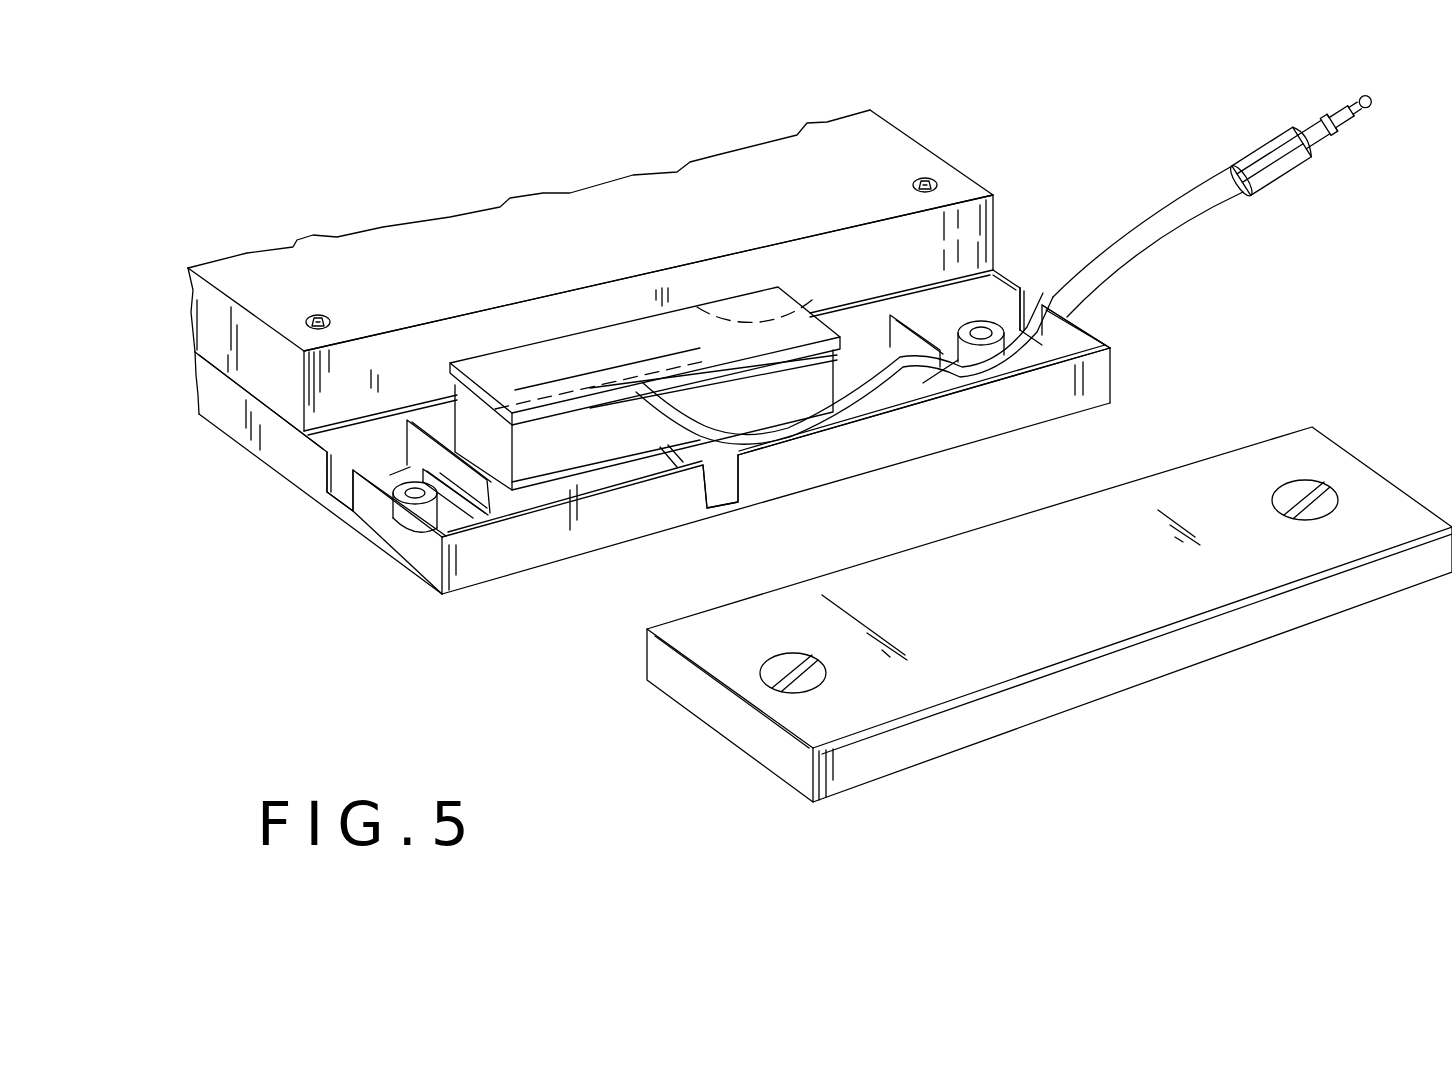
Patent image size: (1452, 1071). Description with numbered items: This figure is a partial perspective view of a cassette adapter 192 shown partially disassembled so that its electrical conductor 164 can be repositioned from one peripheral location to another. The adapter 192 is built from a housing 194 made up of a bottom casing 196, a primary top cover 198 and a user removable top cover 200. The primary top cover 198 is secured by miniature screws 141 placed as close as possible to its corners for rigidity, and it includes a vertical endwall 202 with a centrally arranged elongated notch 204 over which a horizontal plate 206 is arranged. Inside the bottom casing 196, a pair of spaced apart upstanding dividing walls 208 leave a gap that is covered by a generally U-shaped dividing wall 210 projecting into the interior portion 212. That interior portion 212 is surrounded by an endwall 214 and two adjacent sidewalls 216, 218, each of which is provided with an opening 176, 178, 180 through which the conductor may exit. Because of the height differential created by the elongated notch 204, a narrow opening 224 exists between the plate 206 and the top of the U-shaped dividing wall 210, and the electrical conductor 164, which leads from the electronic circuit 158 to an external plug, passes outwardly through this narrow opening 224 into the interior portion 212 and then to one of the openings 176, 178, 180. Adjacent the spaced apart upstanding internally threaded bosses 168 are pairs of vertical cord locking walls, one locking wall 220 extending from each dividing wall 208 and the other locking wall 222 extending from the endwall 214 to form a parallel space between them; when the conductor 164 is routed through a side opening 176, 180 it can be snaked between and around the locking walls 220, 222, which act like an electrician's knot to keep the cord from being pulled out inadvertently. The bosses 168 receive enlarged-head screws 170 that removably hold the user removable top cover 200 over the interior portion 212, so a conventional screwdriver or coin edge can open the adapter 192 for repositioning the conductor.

The screws 141 is at (317, 316).
The electronic circuit 158 is at (740, 340).
The electrical conductor 164 is at (1185, 207).
The internally threaded bosses 168 is at (420, 512).
The screws 170 is at (777, 673).
The opening 176 is at (352, 505).
The opening 178 is at (723, 482).
The opening 180 is at (1075, 296).
The cassette adapter 192 is at (980, 126).
The housing 194 is at (572, 192).
The bottom casing 196 is at (270, 447).
The primary top cover 198 is at (205, 303).
The user removable top cover 200 is at (1267, 457).
The vertical endwall 202 is at (900, 260).
The elongated notch 204 is at (443, 393).
The horizontal plate 206 is at (657, 363).
The dividing walls 208 is at (330, 462).
The U-shaped dividing wall 210 is at (592, 447).
The interior portion 212 is at (650, 467).
The endwall 214 is at (860, 453).
The sidewall 216 is at (390, 540).
The sidewall 218 is at (1100, 330).
The locking wall 220 is at (482, 493).
The locking wall 222 is at (470, 520).
The narrow opening 224 is at (522, 420).